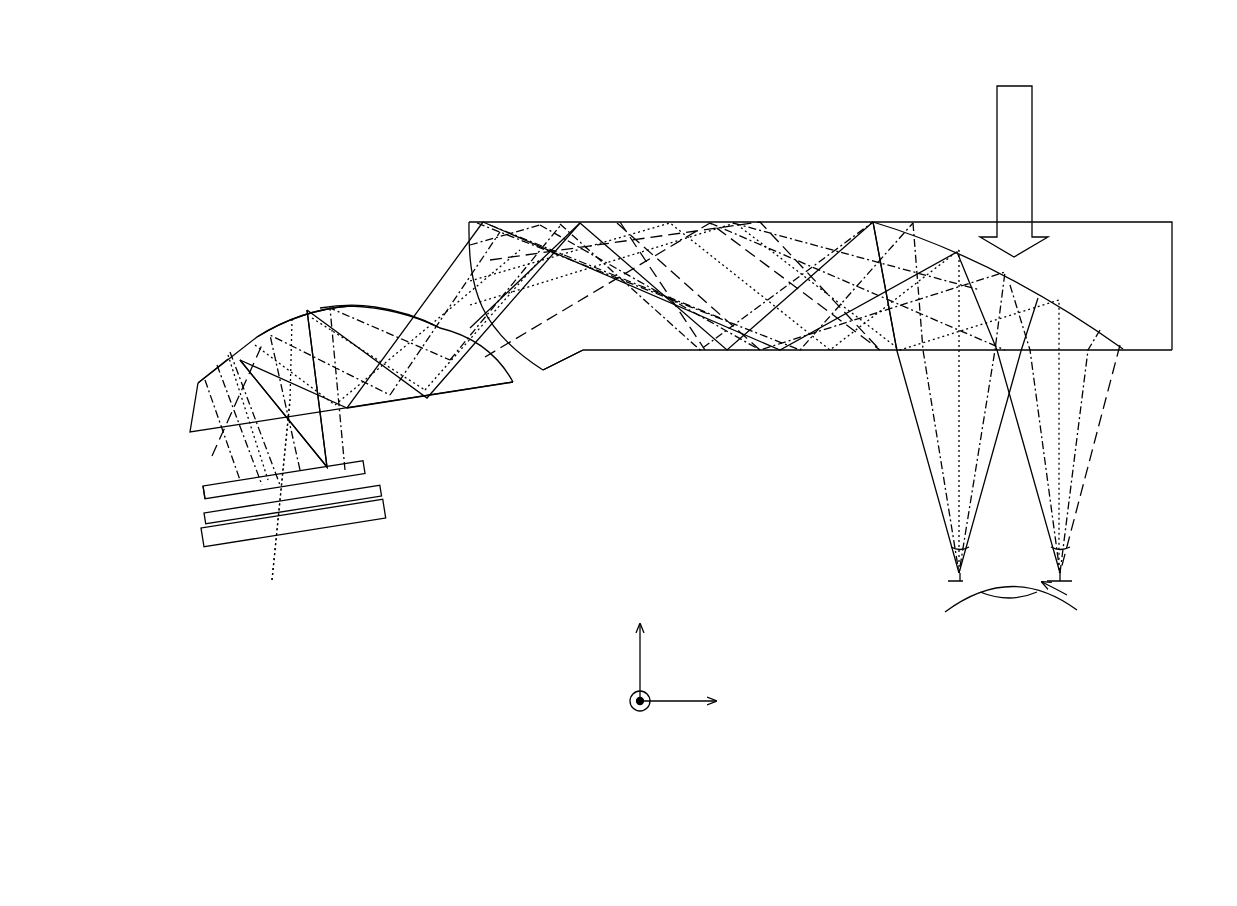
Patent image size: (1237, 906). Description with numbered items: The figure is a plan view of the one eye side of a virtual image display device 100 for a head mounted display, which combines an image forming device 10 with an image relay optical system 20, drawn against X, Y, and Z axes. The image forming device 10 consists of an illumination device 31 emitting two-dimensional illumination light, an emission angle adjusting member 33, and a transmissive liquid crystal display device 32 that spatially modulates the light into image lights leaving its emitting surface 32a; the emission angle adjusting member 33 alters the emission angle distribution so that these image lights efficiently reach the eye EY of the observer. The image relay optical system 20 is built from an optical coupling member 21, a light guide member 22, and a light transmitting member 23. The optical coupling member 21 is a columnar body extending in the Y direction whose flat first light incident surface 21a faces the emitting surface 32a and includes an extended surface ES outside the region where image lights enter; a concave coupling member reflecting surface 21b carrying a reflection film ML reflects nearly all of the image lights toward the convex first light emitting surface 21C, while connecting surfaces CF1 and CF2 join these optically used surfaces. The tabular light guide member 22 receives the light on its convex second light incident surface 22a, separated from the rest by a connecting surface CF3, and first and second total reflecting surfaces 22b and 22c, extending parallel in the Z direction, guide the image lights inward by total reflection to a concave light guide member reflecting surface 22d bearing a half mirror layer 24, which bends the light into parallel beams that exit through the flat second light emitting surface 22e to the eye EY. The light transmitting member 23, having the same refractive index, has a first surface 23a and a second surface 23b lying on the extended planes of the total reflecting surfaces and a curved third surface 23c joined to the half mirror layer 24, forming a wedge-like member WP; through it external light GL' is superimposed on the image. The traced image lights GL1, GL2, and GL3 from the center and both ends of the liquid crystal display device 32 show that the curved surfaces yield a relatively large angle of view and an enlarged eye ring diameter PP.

The virtual image display device 100 is at (535, 98).
The image relay optical system 20 is at (344, 154).
The optical coupling member 21 is at (249, 262).
The first light incident surface 21a is at (190, 431).
The coupling member reflecting surface 21b is at (306, 309).
The first light emitting surface 21C is at (384, 311).
The reflection film ML is at (248, 348).
The connecting surface CF1 is at (190, 392).
The connecting surface CF2 is at (345, 305).
The connecting surface CF3 is at (585, 366).
The extended surface ES is at (447, 395).
The light guide member 22 is at (681, 170).
The second light incident surface 22a is at (560, 374).
The first total reflecting surface 22b is at (553, 221).
The second total reflecting surface 22c is at (705, 352).
The light guide member reflecting surface 22d is at (928, 235).
The second light emitting surface 22e is at (897, 356).
The light transmitting member 23 is at (1070, 235).
The first surface 23a is at (1143, 218).
The second surface 23b is at (1117, 357).
The third surface 23c is at (1093, 450).
The half mirror layer 24 is at (973, 243).
The wedge-like member WP is at (921, 230).
The external light GL' is at (1055, 171).
The image light GL1 is at (947, 500).
The image light GL2 is at (330, 422).
The image light GL3 is at (212, 456).
The image forming device 10 is at (222, 566).
The illumination device 31 is at (345, 517).
The liquid crystal display device 32 is at (205, 517).
The emitting surface 32a is at (205, 488).
The emission angle adjusting member 33 is at (367, 470).
The eye EY is at (943, 598).
The eye ring diameter PP is at (1067, 595).
The X direction X is at (651, 652).
The Y direction Y is at (626, 707).
The Z direction Z is at (690, 713).